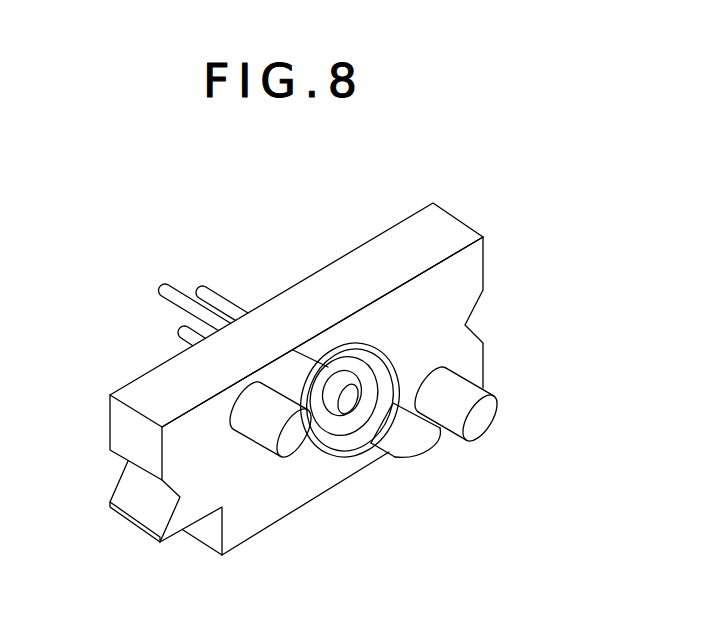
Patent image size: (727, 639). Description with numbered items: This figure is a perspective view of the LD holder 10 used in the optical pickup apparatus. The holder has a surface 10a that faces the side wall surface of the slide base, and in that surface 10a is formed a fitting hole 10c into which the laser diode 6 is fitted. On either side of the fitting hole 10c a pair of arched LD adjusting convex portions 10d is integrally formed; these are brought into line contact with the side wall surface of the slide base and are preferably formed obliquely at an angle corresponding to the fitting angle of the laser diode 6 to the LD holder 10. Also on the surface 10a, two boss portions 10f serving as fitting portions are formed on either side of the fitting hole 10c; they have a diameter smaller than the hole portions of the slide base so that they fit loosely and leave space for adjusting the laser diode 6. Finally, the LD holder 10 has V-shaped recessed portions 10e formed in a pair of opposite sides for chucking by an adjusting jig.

The laser diode 6 is at (349, 403).
The LD holder 10 is at (332, 298).
The surface 10a is at (240, 527).
The fitting hole 10c is at (383, 352).
The LD adjusting convex portions 10d is at (298, 376).
The V-shaped recessed portions 10e is at (163, 506).
The boss portions 10f is at (485, 421).